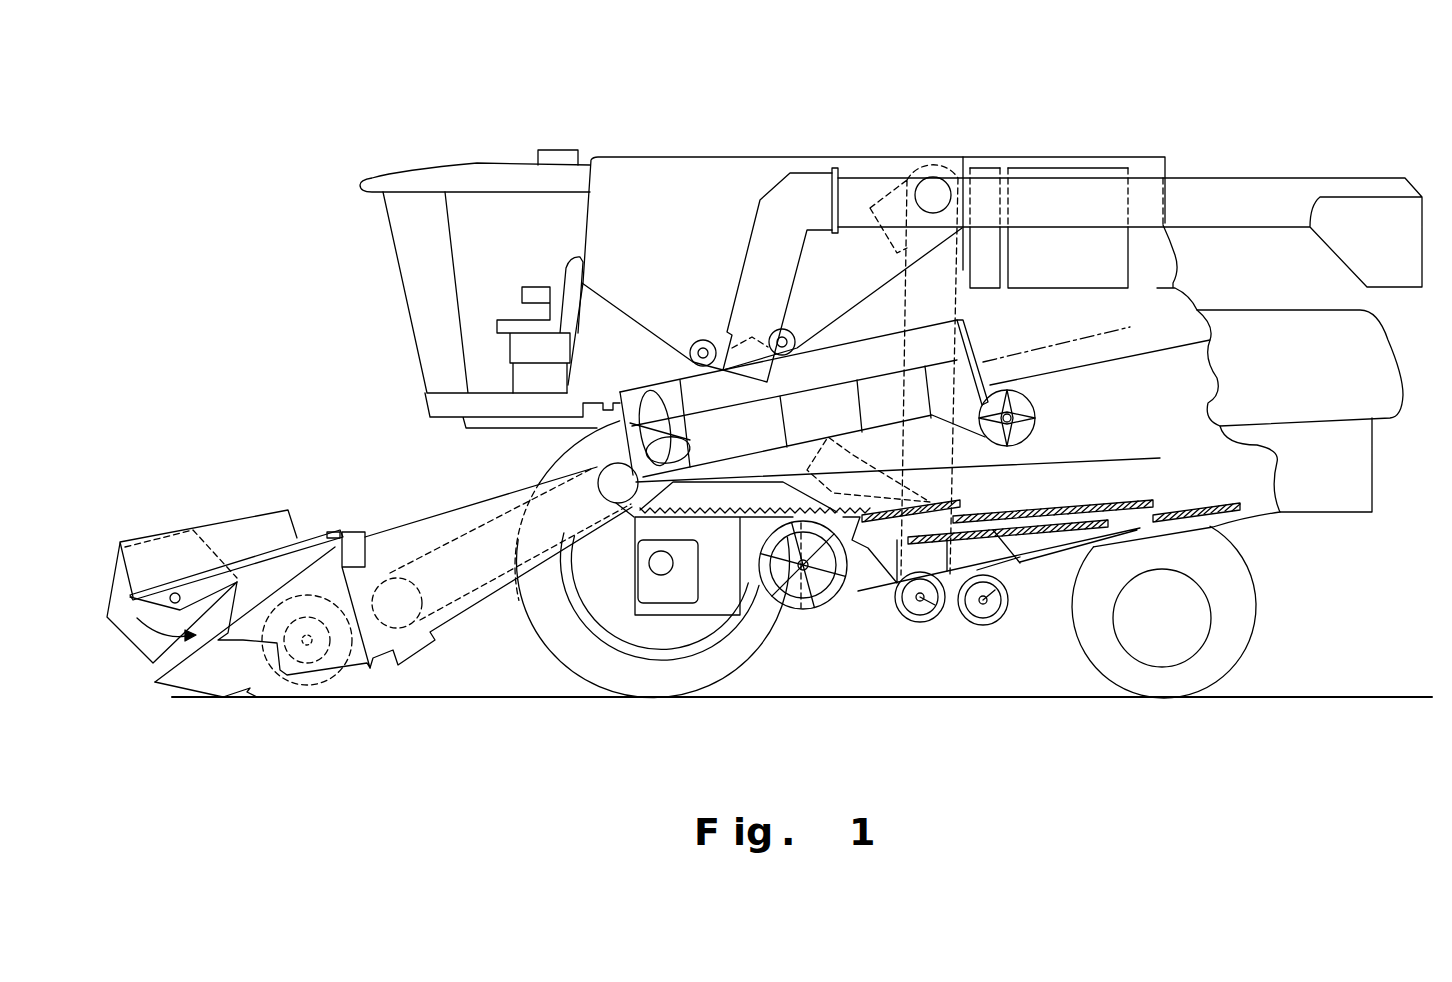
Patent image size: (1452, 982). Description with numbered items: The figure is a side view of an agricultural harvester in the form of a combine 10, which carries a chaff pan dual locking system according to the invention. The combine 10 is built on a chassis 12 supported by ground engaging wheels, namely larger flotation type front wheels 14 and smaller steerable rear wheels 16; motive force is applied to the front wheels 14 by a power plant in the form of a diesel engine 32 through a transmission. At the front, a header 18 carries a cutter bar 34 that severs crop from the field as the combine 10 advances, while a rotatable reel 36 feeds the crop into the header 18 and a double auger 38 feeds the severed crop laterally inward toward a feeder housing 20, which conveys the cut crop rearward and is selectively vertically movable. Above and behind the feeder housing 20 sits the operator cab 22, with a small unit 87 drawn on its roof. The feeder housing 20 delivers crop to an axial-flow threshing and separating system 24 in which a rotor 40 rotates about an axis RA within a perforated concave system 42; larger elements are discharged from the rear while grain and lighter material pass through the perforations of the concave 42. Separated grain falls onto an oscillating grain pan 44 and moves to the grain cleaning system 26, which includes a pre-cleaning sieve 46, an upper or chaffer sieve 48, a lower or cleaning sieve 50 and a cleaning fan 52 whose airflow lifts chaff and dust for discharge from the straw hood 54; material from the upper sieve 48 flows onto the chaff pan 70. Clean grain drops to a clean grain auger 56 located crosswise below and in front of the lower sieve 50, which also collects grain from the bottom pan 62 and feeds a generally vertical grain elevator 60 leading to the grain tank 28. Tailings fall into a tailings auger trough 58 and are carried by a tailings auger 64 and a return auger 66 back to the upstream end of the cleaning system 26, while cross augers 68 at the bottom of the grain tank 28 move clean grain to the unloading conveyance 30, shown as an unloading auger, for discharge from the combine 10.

The combine 10 is at (463, 132).
The chassis 12 is at (1212, 535).
The front wheels 14 is at (557, 653).
The rear wheels 16 is at (1245, 633).
The header 18 is at (204, 494).
The feeder housing 20 is at (437, 515).
The operator cab 22 is at (396, 271).
The threshing and separating system 24 is at (552, 446).
The grain cleaning system 26 is at (875, 629).
The grain tank 28 is at (652, 160).
The unloading conveyance 30 is at (1263, 185).
The diesel engine 32 is at (1055, 170).
The cutter bar 34 is at (227, 700).
The reel 36 is at (118, 595).
The double auger 38 is at (310, 665).
The rotor 40 is at (650, 395).
The concave system 42 is at (850, 372).
The grain pan 44 is at (632, 543).
The pre-cleaning sieve 46 is at (962, 505).
The upper sieve 48 is at (1070, 500).
The lower sieve 50 is at (1040, 546).
The cleaning fan 52 is at (806, 610).
The straw hood 54 is at (1384, 357).
The clean grain auger 56 is at (932, 620).
The tailings auger trough 58 is at (1094, 550).
The grain elevator 60 is at (960, 292).
The bottom pan 62 is at (1068, 548).
The tailings auger 64 is at (984, 624).
The return auger 66 is at (889, 488).
The cross augers 68 is at (703, 338).
The chaff pan 70 is at (1190, 503).
The GPS receiver / antenna 87 is at (556, 150).
The rotor axis RA is at (1060, 335).